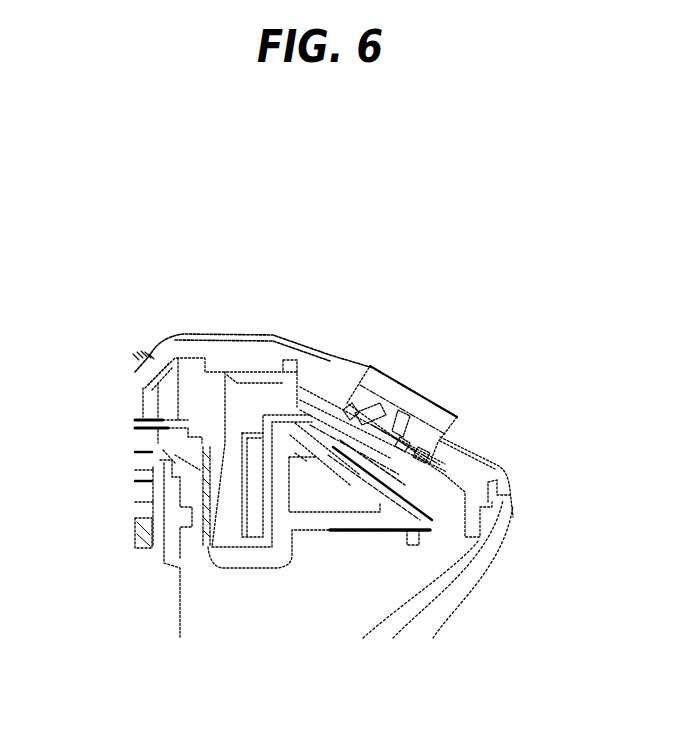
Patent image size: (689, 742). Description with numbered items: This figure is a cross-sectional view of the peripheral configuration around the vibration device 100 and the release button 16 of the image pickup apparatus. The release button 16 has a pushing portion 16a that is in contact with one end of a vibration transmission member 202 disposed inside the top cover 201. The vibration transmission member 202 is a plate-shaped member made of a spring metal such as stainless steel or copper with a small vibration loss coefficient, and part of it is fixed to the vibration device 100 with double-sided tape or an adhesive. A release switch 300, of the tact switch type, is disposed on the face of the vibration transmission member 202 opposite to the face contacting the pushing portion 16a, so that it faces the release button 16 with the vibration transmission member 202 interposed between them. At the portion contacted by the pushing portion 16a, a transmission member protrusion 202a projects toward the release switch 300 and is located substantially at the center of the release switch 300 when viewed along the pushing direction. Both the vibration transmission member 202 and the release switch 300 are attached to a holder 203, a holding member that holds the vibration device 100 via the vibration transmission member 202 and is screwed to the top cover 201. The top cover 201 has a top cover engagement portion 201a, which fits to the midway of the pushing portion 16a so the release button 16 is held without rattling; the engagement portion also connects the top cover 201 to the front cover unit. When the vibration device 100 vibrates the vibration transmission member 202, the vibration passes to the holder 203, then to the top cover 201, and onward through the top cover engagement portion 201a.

The top cover 201 is at (198, 335).
The top cover engagement portion 201a is at (388, 428).
The vibration transmission member 202 is at (303, 425).
The transmission member protrusion 202a is at (372, 478).
The holder 203 is at (315, 533).
The release button 16 is at (428, 397).
The pushing portion 16a is at (385, 459).
The vibration device 100 is at (250, 482).
The release switch 300 is at (378, 470).